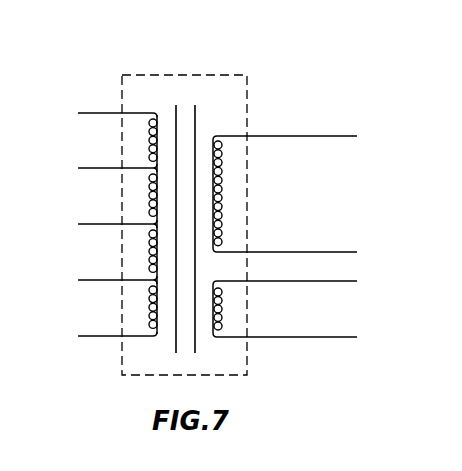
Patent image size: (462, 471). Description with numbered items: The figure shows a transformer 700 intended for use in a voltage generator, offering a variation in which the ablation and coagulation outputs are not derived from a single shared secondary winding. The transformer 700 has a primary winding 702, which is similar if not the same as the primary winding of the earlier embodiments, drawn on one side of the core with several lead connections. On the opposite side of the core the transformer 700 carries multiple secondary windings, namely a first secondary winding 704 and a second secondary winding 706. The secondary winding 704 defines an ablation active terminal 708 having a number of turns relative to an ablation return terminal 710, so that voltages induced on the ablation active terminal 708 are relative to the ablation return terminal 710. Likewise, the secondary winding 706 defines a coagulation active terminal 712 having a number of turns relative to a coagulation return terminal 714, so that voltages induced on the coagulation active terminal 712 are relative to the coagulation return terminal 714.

The transformer 700 is at (114, 366).
The primary winding 702 is at (119, 66).
The secondary winding 704 is at (290, 184).
The secondary winding 706 is at (285, 305).
The ablation active terminal 708 is at (335, 136).
The ablation return terminal 710 is at (335, 252).
The coagulation active terminal 712 is at (347, 281).
The coagulation return terminal 714 is at (340, 337).